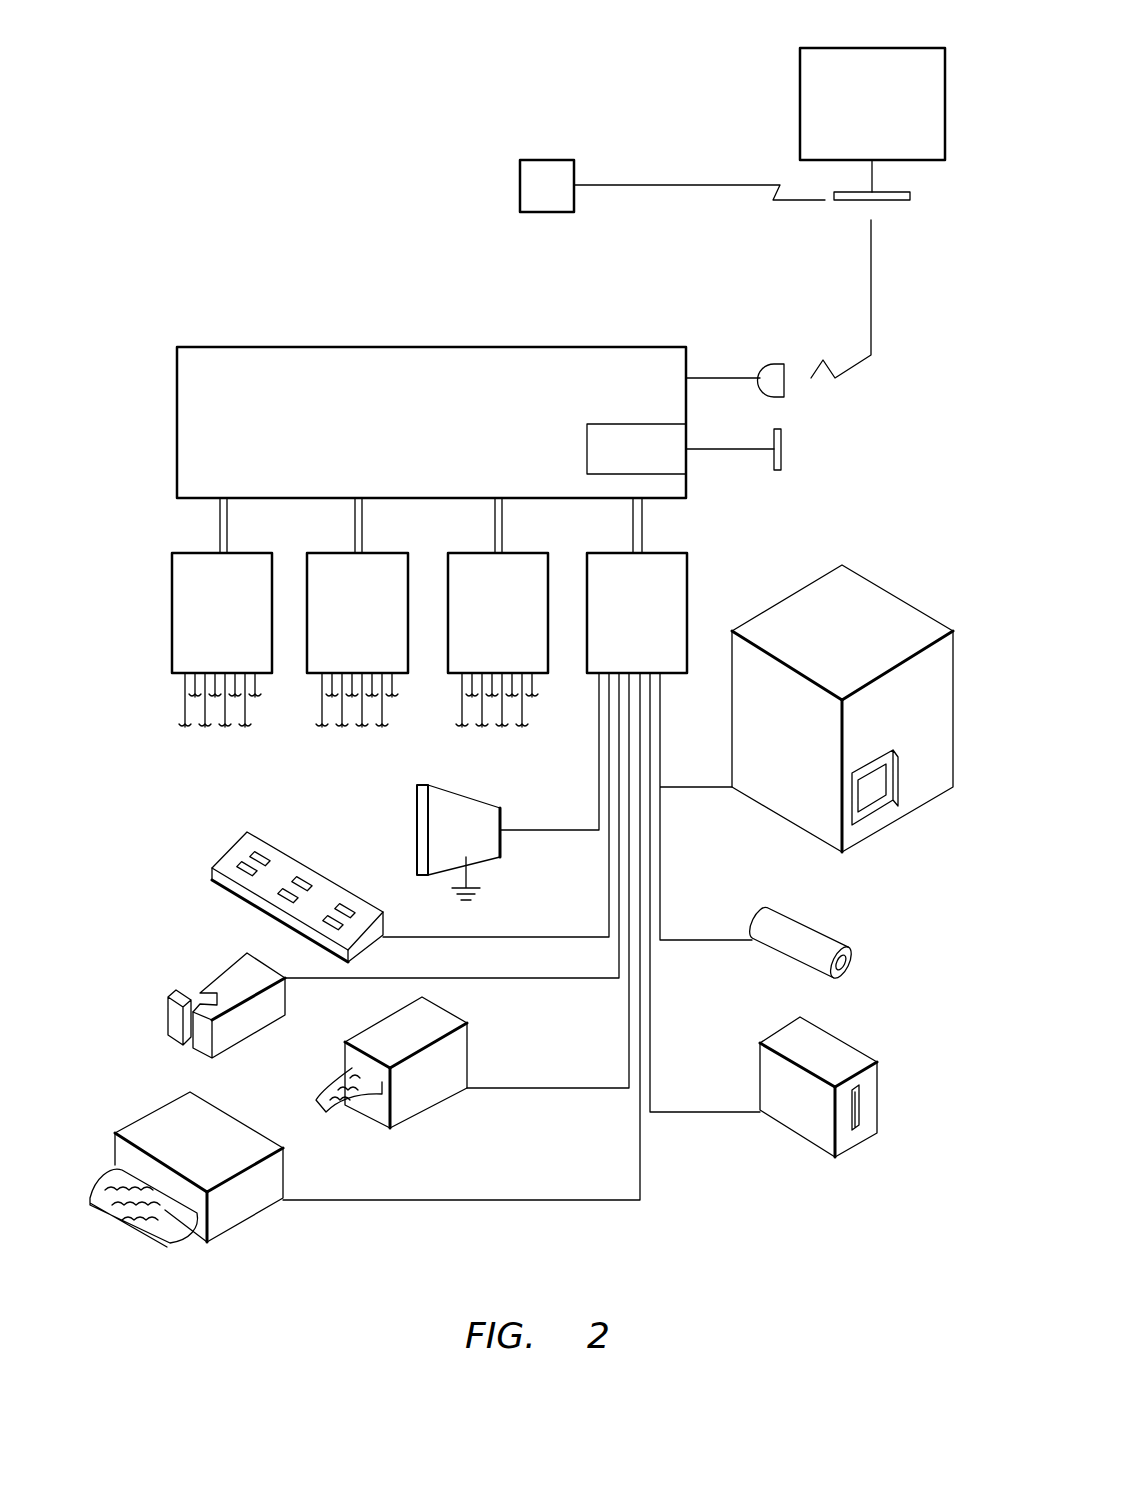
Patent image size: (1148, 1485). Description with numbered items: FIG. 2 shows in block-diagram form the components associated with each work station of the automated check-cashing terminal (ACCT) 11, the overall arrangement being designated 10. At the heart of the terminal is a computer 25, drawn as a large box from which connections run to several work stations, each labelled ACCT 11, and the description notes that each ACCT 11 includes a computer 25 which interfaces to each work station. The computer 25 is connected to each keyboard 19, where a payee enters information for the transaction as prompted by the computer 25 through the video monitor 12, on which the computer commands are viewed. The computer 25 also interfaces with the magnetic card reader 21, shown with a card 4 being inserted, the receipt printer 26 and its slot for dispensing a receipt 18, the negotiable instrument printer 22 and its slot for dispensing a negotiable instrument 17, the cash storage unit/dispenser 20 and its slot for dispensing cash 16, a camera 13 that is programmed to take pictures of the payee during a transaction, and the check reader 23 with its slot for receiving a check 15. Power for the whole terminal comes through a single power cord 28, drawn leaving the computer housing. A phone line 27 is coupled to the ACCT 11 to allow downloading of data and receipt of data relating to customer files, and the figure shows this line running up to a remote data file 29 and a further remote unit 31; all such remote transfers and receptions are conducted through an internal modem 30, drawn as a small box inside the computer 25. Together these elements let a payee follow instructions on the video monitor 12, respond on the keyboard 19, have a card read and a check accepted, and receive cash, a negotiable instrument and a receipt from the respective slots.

The system 10 is at (357, 241).
The remote data file 29 is at (818, 48).
The remote terminal 31 is at (550, 160).
The phone line 27 is at (886, 208).
The computer 25 is at (297, 347).
The internal modem 30 is at (654, 435).
The power cord 28 is at (772, 364).
The automated check-cashing terminal (ACCT) 11 is at (265, 553).
The video monitor 12 is at (418, 822).
The keyboard 19 is at (247, 840).
The magnetic card reader 21 is at (238, 970).
The card 4 is at (200, 1003).
The cash storage unit/dispenser 20 is at (867, 597).
The cash dispensing slot 16 is at (873, 795).
The camera 13 is at (840, 940).
The check reader 23 is at (815, 1125).
The check insertion slot 15 is at (860, 1123).
The receipt printer 26 is at (413, 1100).
The receipt retrieval slot 18 is at (337, 1115).
The negotiable instrument printer 22 is at (177, 1123).
The negotiable instrument dispensing slot 17 is at (162, 1193).